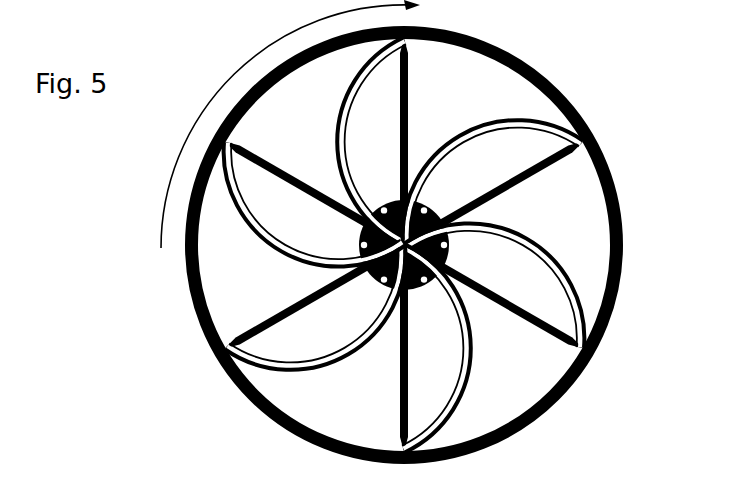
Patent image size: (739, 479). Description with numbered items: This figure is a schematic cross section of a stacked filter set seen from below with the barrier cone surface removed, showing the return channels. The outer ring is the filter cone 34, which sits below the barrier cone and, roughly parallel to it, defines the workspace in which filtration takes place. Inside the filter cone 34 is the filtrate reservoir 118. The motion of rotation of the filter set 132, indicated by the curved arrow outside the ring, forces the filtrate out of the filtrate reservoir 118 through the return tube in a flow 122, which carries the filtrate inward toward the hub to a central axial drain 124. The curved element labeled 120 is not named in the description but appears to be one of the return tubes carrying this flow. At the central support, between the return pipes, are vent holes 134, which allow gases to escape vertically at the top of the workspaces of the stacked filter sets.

The filter cone 34 is at (607, 327).
The filtrate reservoir 118 is at (586, 244).
The blade 120 is at (538, 122).
The flow 122 is at (459, 144).
The central axial drain 124 is at (442, 247).
The motion of rotation of the filter set 132 is at (260, 53).
The vent holes 134 is at (386, 210).